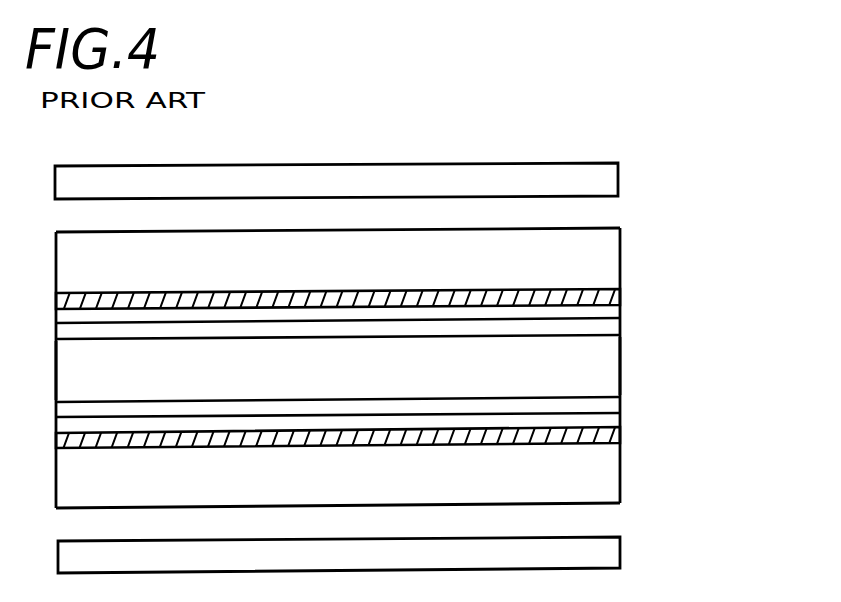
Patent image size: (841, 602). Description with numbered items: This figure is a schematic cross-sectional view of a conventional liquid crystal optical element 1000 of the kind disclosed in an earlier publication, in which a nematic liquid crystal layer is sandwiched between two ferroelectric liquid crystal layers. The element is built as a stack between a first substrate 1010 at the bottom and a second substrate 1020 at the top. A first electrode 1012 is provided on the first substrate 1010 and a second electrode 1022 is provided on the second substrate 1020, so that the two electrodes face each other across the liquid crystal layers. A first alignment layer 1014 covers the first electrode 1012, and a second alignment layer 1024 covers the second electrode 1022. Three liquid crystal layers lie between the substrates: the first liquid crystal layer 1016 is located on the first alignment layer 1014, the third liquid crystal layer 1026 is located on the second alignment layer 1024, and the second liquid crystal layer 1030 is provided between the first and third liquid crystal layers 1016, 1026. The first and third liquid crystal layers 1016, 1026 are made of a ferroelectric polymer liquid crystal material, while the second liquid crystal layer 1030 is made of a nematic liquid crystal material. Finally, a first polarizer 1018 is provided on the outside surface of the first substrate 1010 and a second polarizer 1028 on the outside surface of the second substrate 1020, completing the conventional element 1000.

The liquid crystal optical element 1000 is at (607, 130).
The second polarizer 1028 is at (607, 177).
The second substrate 1020 is at (610, 242).
The second electrode 1022 is at (613, 290).
The second alignment layer 1024 is at (613, 308).
The third liquid crystal layer 1026 is at (613, 328).
The second liquid crystal layer 1030 is at (612, 368).
The first liquid crystal layer 1016 is at (612, 403).
The first alignment layer 1014 is at (612, 420).
The first electrode 1012 is at (612, 432).
The first substrate 1010 is at (612, 478).
The first polarizer 1018 is at (612, 552).